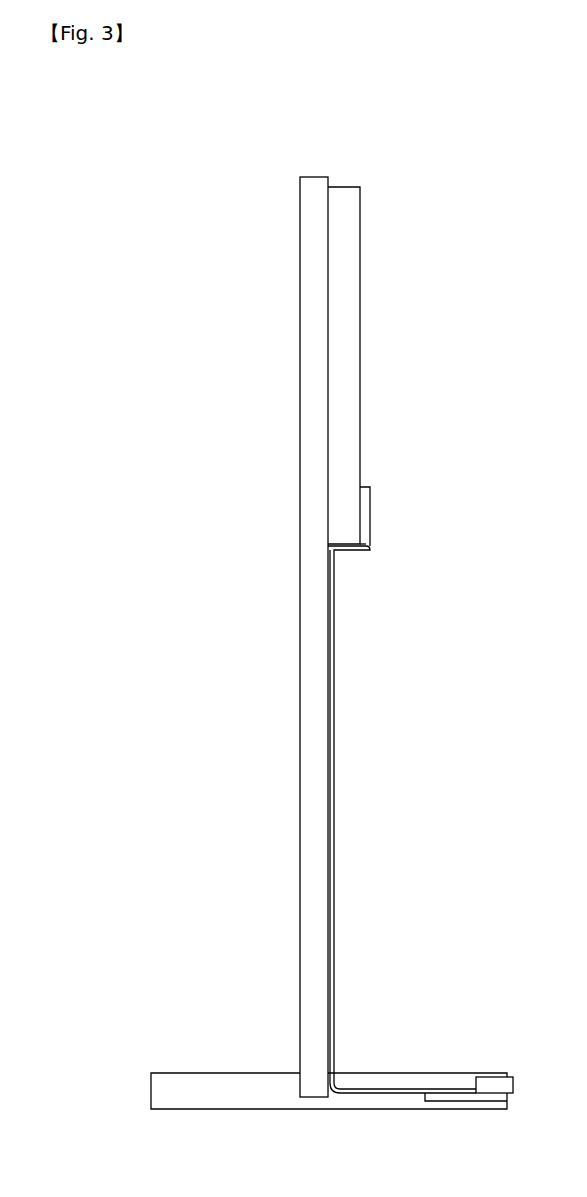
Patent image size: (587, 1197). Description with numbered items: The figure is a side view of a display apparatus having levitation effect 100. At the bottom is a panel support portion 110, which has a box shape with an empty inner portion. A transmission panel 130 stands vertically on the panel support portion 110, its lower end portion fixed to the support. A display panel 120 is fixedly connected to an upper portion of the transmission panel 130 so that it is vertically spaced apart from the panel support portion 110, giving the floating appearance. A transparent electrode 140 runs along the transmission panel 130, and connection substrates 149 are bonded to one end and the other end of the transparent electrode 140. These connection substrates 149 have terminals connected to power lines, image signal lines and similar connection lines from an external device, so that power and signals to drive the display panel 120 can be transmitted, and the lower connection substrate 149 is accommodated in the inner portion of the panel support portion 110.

The display apparatus having levitation effect 100 is at (122, 193).
The panel support portion 110 is at (233, 1081).
The display panel 120 is at (352, 314).
The transmission panel 130 is at (300, 456).
The transparent electrode 140 is at (330, 617).
The connection substrate 149 is at (365, 516).